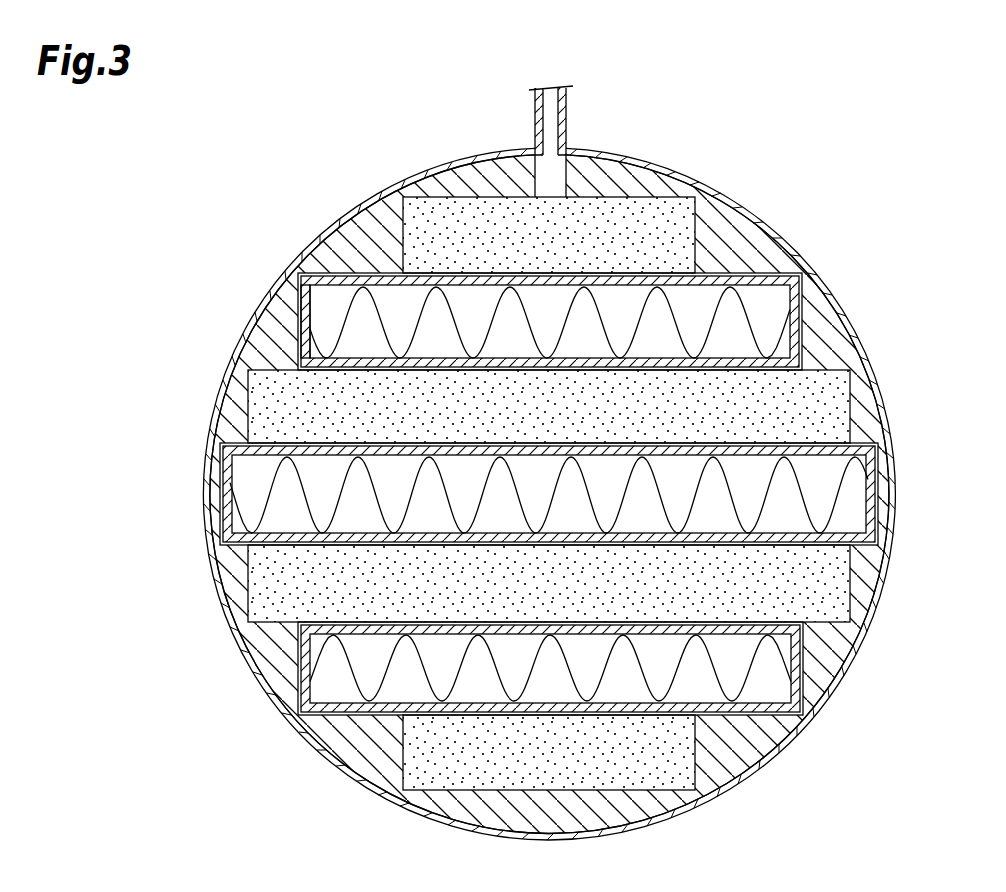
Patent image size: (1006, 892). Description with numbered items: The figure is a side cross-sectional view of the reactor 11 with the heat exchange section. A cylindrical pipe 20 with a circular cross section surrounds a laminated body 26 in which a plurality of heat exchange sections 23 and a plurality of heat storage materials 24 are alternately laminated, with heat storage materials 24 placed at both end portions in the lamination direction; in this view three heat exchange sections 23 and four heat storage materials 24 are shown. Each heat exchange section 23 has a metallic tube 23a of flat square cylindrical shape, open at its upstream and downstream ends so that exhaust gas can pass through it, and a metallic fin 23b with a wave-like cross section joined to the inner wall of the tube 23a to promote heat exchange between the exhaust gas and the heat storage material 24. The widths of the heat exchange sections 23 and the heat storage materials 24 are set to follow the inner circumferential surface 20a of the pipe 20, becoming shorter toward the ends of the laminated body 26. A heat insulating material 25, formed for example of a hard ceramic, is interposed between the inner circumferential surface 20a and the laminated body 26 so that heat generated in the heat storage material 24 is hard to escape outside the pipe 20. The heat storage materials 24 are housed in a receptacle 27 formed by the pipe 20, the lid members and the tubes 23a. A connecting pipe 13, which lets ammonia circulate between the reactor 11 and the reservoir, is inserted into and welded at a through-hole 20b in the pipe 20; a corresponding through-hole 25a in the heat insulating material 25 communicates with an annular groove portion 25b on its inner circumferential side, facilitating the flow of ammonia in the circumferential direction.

The reactor with the heat exchange section 11 is at (820, 207).
The connecting pipe 13 is at (535, 105).
The pipe 20 is at (357, 210).
The inner circumferential surface 20a is at (383, 203).
The through-hole 20b is at (561, 153).
The heat exchange section 23 is at (821, 318).
The tube 23a is at (776, 272).
The fin 23b is at (785, 345).
The heat storage material 24 is at (656, 215).
The heat insulating material 25 is at (634, 190).
The through-hole 25a is at (562, 178).
The groove portion 25b is at (303, 318).
The laminated body 26 is at (727, 240).
The receptacle 27 is at (258, 280).